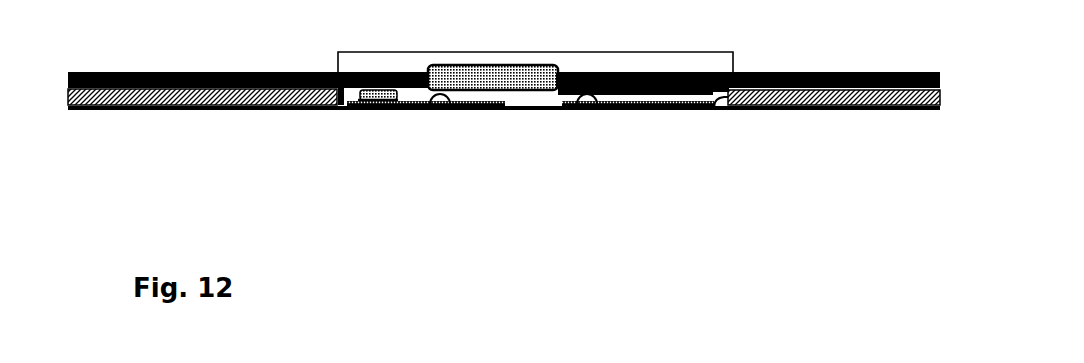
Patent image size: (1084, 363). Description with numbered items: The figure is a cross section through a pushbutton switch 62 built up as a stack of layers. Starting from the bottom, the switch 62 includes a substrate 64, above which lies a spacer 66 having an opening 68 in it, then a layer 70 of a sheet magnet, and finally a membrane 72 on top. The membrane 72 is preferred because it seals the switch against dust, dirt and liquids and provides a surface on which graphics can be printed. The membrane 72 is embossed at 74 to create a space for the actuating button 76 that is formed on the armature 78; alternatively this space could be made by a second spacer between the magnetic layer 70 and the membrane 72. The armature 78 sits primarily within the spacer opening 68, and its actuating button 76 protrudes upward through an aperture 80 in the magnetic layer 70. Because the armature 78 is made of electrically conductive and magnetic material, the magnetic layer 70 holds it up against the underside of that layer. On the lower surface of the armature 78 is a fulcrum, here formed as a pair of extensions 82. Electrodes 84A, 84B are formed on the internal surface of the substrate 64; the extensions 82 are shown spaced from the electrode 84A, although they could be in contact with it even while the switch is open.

The pushbutton switch 62 is at (117, 133).
The substrate 64 is at (220, 110).
The spacer 66 is at (785, 103).
The opening 68 is at (715, 110).
The layer of a sheet magnet 70 is at (803, 76).
The membrane 72 is at (150, 72).
The embossing 74 is at (723, 52).
The actuating button 76 is at (494, 65).
The armature 78 is at (620, 93).
The aperture 80 is at (562, 75).
The extensions 82 is at (358, 108).
The electrode 84A is at (452, 108).
The electrode 84B is at (574, 109).